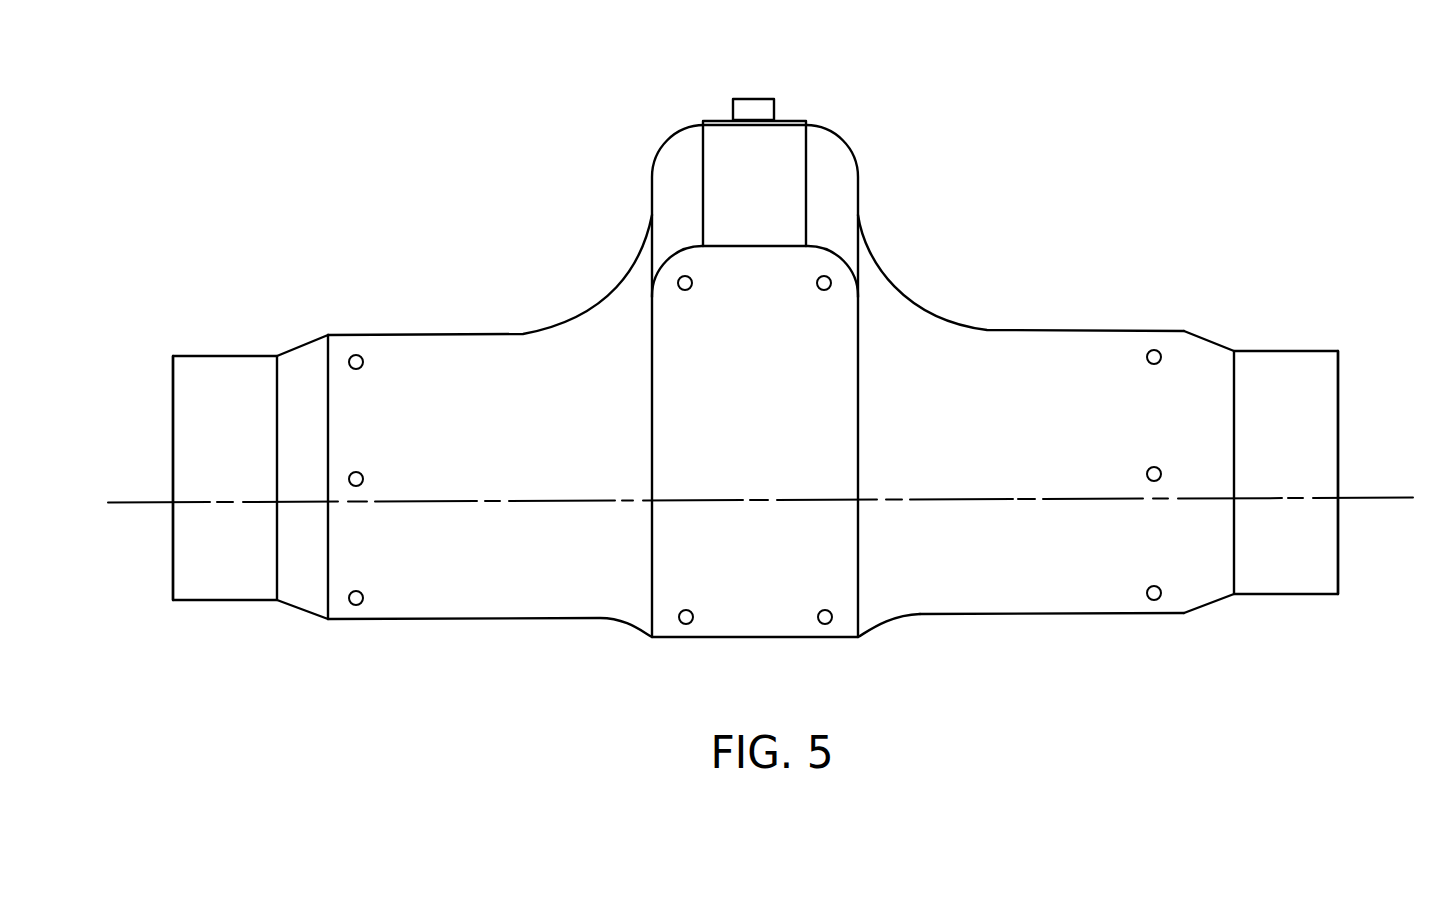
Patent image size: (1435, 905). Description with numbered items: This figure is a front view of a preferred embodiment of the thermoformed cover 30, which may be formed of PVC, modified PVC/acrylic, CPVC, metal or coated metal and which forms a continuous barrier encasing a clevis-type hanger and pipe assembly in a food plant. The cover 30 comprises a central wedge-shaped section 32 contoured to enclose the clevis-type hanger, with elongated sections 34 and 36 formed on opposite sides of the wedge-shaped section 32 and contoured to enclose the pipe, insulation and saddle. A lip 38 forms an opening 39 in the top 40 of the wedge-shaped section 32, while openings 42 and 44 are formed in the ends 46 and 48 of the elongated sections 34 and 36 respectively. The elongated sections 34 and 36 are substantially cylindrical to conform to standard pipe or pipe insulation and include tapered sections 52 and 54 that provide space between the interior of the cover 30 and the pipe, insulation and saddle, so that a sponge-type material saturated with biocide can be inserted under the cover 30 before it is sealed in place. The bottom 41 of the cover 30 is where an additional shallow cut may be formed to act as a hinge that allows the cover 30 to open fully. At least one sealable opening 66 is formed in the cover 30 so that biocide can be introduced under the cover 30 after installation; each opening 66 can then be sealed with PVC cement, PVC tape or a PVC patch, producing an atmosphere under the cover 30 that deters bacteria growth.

The thermoformed cover 30 is at (490, 186).
The central wedge-shaped section 32 is at (790, 614).
The elongated section 34 is at (442, 597).
The elongated section 36 is at (1042, 593).
The lip 38 is at (731, 110).
The opening 39 is at (755, 99).
The top 40 is at (800, 119).
The bottom 41 is at (880, 625).
The opening 42 is at (173, 548).
The opening 44 is at (1340, 562).
The end 46 is at (218, 602).
The end 48 is at (1287, 596).
The tapered section 52 is at (303, 598).
The tapered section 54 is at (1207, 593).
The sealable opening 66 is at (356, 354).